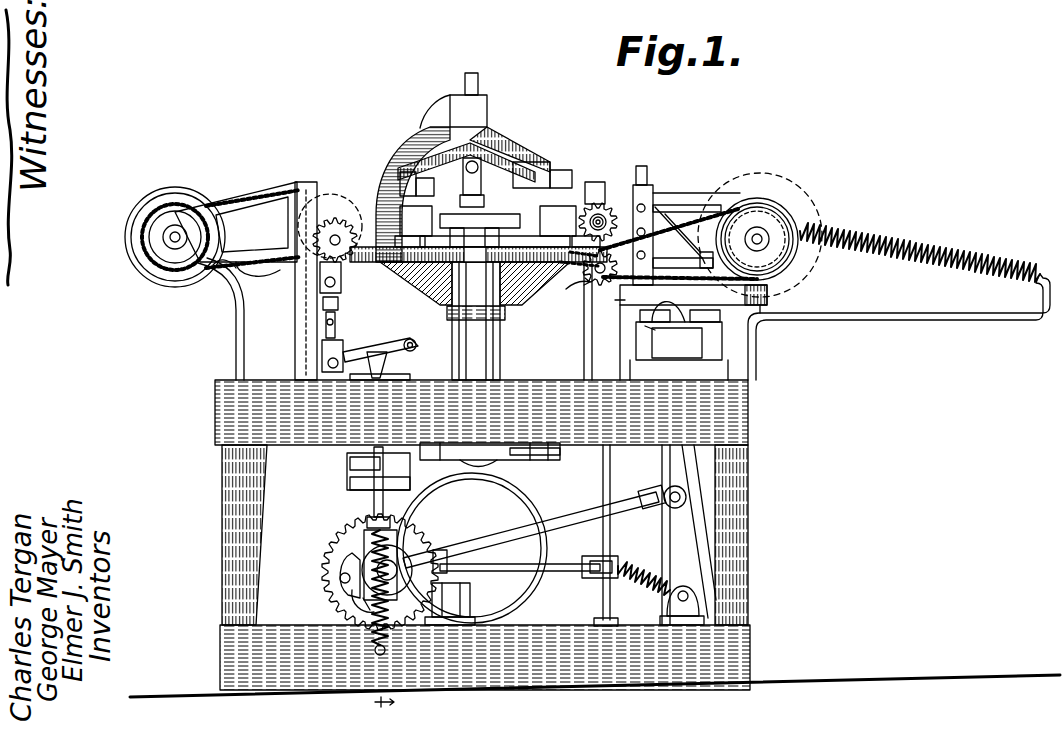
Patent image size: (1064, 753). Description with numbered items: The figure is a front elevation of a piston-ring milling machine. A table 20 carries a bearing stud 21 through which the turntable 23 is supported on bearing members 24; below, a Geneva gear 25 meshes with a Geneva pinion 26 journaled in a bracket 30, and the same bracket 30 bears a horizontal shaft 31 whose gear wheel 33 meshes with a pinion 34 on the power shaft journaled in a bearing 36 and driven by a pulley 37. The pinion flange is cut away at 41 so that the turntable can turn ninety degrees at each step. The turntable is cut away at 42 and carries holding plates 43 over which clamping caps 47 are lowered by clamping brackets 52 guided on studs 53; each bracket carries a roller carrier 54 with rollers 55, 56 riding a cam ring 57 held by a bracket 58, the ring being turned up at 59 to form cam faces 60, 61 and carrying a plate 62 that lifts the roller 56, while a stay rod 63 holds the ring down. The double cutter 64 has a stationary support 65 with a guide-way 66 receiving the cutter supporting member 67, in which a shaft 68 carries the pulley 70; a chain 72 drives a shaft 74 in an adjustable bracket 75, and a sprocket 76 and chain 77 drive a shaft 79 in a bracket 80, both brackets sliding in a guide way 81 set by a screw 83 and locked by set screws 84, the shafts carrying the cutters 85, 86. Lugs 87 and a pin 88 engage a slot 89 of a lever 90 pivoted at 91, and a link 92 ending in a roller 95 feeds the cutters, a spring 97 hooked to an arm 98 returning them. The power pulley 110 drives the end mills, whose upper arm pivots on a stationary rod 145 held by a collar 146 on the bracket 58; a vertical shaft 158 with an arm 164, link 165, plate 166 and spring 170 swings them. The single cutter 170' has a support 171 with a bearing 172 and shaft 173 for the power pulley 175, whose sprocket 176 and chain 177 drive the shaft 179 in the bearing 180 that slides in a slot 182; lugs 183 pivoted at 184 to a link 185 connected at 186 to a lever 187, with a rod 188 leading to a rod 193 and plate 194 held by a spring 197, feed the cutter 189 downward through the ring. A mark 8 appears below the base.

The direction arrow 8 is at (370, 340).
The support or table 20 is at (735, 412).
The bearing stud 21 is at (500, 348).
The turntable 23 is at (540, 270).
The bearing members 24 is at (505, 320).
The Geneva gear 25 is at (556, 460).
The Geneva pinion 26 is at (346, 478).
The support or bracket 30 is at (365, 510).
The second shaft 31 is at (387, 570).
The gear wheel 33 is at (338, 550).
The pinion 34 is at (470, 562).
The bearing 36 is at (467, 604).
The pulley 37 is at (497, 508).
The cut away portion of flange 41 is at (372, 262).
The cut away places of turntable 42 is at (470, 262).
The piston ring holding plate 43 is at (497, 237).
The clamping cap 47 is at (495, 262).
The clamping bracket 52 is at (425, 240).
The guiding studs 53 is at (495, 230).
The roller carrier 54 is at (398, 182).
The roller 55 is at (351, 233).
The roller 56 is at (398, 182).
The cam ring 57 is at (572, 206).
The bracket 58 is at (412, 135).
The upturned portion 59 is at (505, 160).
The cam face 60 is at (420, 182).
The cam face 61 is at (548, 172).
The outwardly extending plate 62 is at (574, 174).
The stay rod 63 is at (486, 135).
The double cutter mechanism 64 is at (662, 193).
The stationary support 65 is at (710, 342).
The guide-way 66 is at (770, 300).
The cutter supporting member 67 is at (695, 210).
The shaft 68 is at (800, 238).
The pulley 70 is at (780, 232).
The chain 72 is at (800, 203).
The shaft 74 is at (608, 210).
The adjustable bracket 75 is at (645, 170).
The sprocket 76 is at (800, 262).
The chain 77 is at (688, 233).
The shaft 79 is at (596, 283).
The adjustable bracket 80 is at (620, 300).
The guide way 81 is at (653, 200).
The adjustable screw 83 is at (607, 208).
The set screws 84 is at (735, 210).
The cutter 85 is at (599, 221).
The cutter 86 is at (575, 292).
The lugs 87 is at (690, 324).
The pin 88 is at (680, 343).
The slot 89 is at (650, 328).
The lever 90 is at (664, 463).
The pivot 91 is at (736, 535).
The link 92 is at (562, 528).
The roller 95 is at (350, 595).
The spring 97 is at (902, 248).
The outwardly extending arm 98 is at (925, 321).
The power pulley 110 is at (493, 462).
The stationary rod 145 is at (480, 85).
The collar 146 is at (441, 105).
The vertically extending shaft 158 is at (594, 535).
The arm 164 is at (610, 562).
The link 165 is at (563, 572).
The plate 166 is at (342, 575).
The spring 170 is at (665, 605).
The single cutter mechanism 170' is at (236, 211).
The support 171 is at (243, 325).
The bearing 172 is at (165, 238).
The shaft 173 is at (176, 248).
The power pulley 175 is at (180, 290).
The sprocket wheel 176 is at (176, 237).
The chain 177 is at (210, 264).
The shaft 179 is at (253, 229).
The bearing 180 is at (285, 268).
The slot 182 is at (312, 195).
The lugs 183 is at (326, 300).
The pivot 184 is at (328, 284).
The link 185 is at (331, 336).
The pivot 186 is at (333, 368).
The lever 187 is at (395, 350).
The rod 188 is at (417, 350).
The single cutter 189 is at (342, 222).
The rod 193 is at (365, 490).
The plate 194 is at (340, 580).
The spring 197 is at (472, 478).